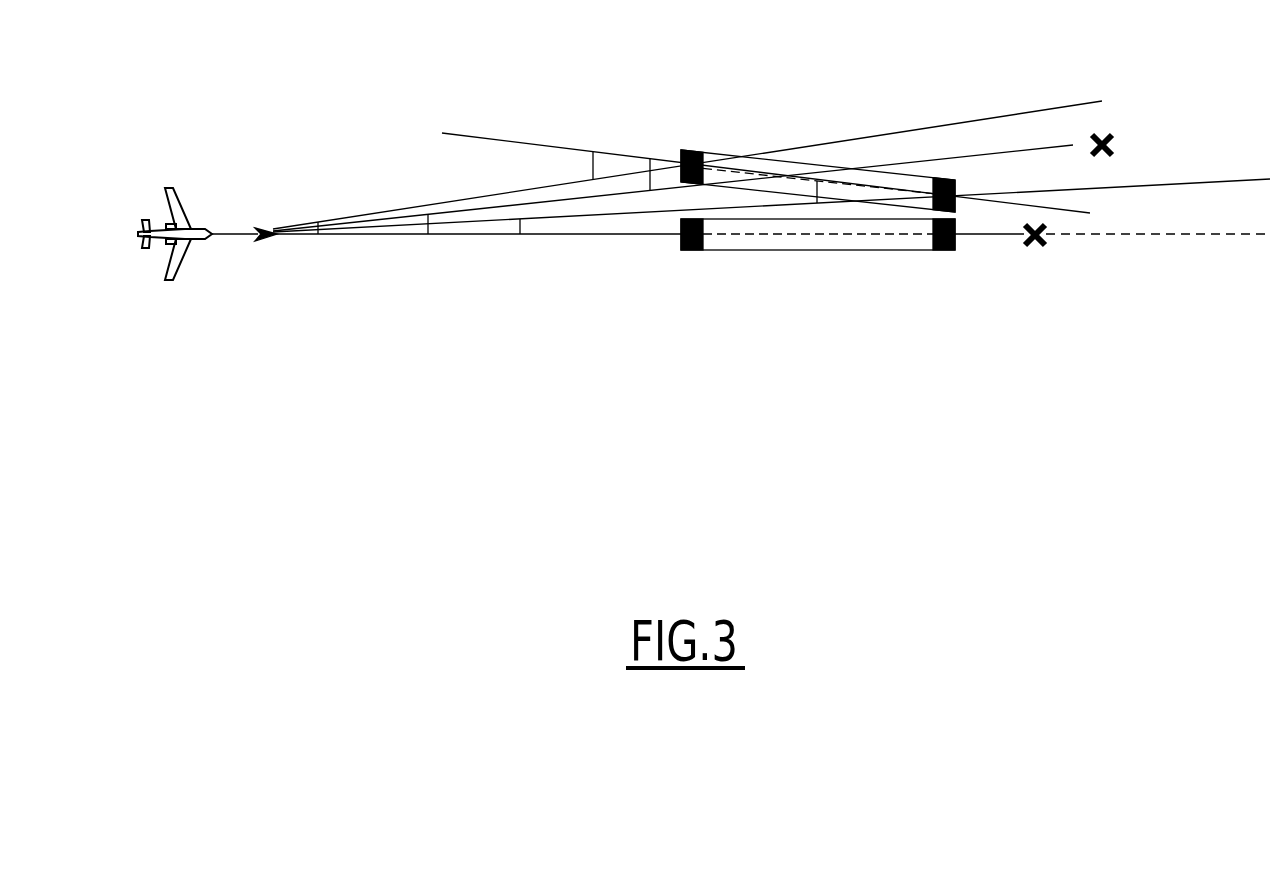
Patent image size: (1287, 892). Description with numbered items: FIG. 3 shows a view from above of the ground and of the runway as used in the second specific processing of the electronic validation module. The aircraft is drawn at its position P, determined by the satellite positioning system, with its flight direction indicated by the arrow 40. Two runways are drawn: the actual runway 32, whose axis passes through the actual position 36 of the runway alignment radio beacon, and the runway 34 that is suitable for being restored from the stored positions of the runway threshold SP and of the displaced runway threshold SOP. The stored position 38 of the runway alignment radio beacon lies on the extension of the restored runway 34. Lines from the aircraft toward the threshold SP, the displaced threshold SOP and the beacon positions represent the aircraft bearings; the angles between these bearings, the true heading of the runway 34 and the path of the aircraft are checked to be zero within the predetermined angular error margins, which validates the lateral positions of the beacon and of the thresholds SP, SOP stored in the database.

The position of the aircraft P is at (147, 247).
The aircraft flight direction 40 is at (222, 240).
The actual runway 32 is at (845, 243).
The runway suitable for being restored 34 is at (713, 150).
The actual position of the runway alignment radio beacon 36 is at (1036, 247).
The position of the runway alignment radio beacon 38 is at (1115, 142).
The runway threshold SP is at (697, 150).
The displaced runway threshold SOP is at (941, 180).